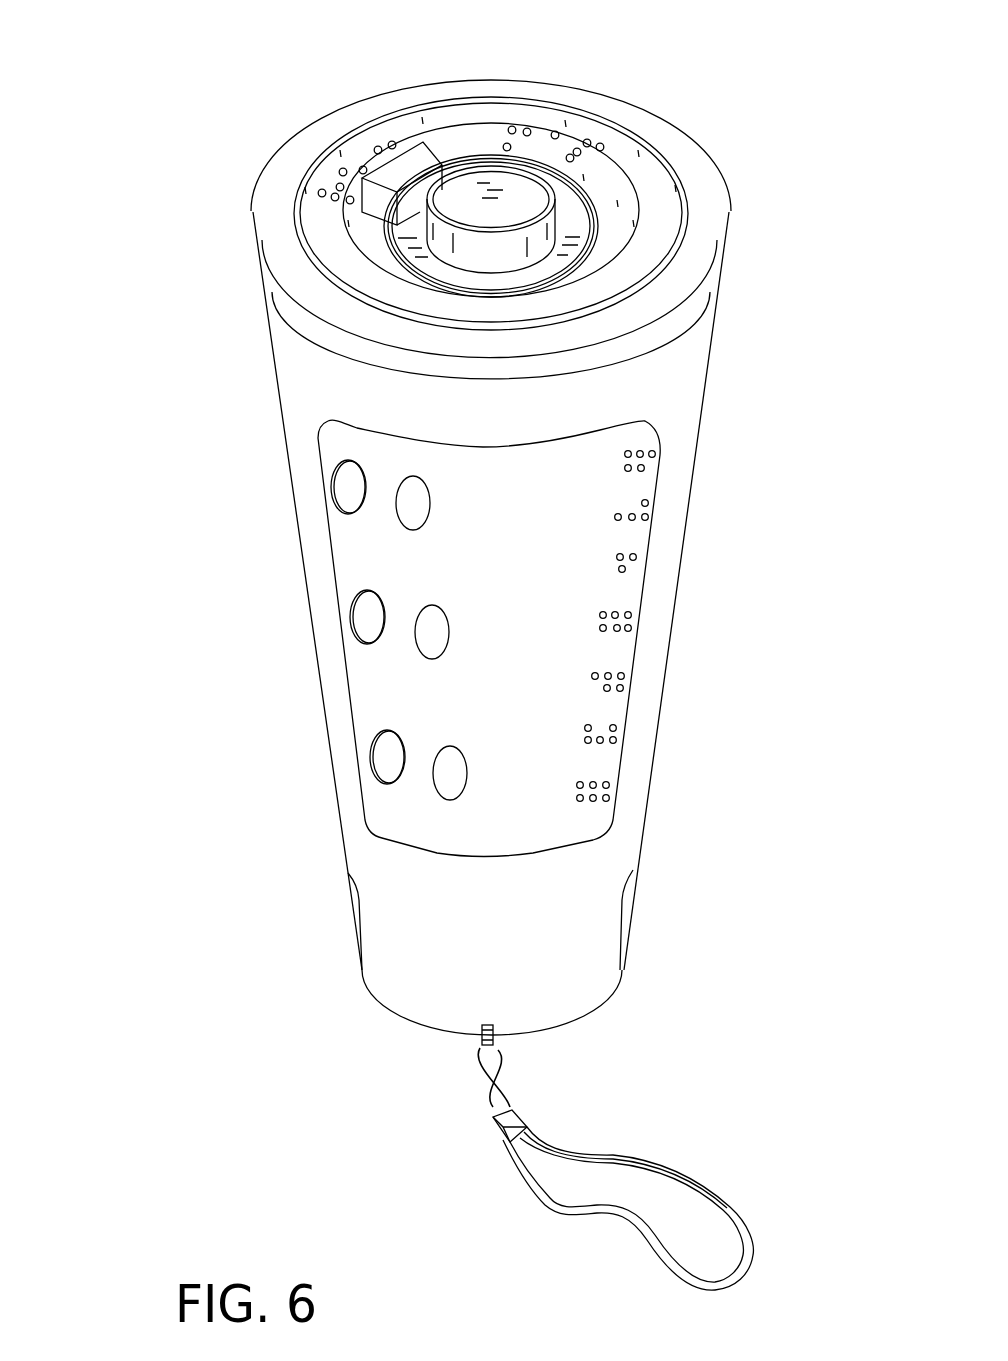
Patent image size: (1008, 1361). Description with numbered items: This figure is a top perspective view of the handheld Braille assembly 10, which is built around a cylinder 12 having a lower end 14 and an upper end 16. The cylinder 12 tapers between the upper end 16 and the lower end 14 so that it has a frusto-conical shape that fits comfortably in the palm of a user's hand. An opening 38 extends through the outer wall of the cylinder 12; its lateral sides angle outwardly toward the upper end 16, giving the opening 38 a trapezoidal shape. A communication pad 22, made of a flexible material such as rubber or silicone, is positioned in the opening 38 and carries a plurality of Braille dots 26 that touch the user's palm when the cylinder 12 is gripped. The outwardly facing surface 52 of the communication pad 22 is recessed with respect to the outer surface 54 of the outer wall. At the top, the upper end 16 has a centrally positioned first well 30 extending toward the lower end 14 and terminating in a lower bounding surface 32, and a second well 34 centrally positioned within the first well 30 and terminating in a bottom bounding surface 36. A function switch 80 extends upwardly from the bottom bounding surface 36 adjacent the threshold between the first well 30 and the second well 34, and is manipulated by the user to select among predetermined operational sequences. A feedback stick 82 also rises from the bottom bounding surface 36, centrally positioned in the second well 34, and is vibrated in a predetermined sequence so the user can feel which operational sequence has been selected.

The handheld Braille assembly 10 is at (86, 303).
The cylinder 12 is at (273, 362).
The lower end 14 is at (400, 1018).
The upper end 16 is at (312, 138).
The communication pad 22 is at (572, 467).
The Braille dots 26 is at (387, 757).
The first well 30 is at (663, 180).
The lower bounding surface 32 is at (642, 163).
The second well 34 is at (370, 215).
The bottom bounding surface 36 is at (488, 176).
The opening 38 is at (357, 426).
The outwardly facing surface 52 is at (478, 823).
The outer surface 54 is at (430, 900).
The function switch 80 is at (406, 155).
The feedback stick 82 is at (518, 170).